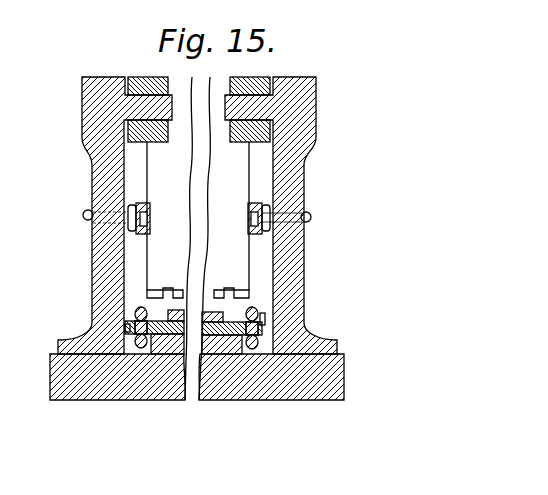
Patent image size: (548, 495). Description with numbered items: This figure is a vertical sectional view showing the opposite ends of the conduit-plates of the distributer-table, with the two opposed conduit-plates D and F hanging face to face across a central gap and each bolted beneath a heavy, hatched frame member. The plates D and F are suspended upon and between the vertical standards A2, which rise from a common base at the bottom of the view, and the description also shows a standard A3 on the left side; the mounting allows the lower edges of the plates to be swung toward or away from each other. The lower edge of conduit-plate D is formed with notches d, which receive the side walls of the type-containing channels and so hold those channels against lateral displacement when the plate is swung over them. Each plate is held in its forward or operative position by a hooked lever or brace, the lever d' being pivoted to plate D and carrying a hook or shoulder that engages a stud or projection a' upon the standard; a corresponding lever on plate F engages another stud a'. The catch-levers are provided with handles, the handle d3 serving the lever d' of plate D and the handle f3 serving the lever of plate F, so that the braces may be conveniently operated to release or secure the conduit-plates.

The vertical standard A2 is at (308, 246).
The left standard of frame A3 is at (89, 222).
The conduit-plate F is at (128, 78).
The conduit-plate D is at (158, 183).
The notch d is at (198, 287).
The hooked lever d' is at (198, 211).
The stud a' is at (199, 218).
The handle f3 is at (83, 215).
The handle d3 is at (311, 217).